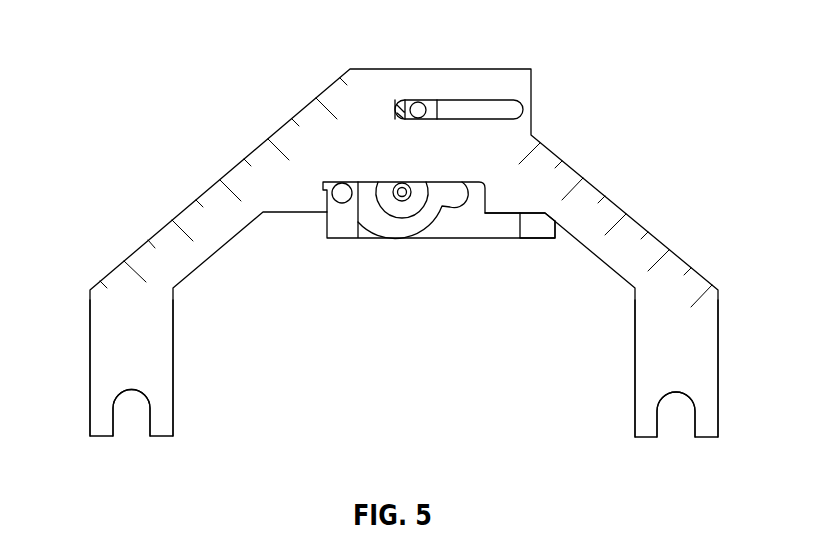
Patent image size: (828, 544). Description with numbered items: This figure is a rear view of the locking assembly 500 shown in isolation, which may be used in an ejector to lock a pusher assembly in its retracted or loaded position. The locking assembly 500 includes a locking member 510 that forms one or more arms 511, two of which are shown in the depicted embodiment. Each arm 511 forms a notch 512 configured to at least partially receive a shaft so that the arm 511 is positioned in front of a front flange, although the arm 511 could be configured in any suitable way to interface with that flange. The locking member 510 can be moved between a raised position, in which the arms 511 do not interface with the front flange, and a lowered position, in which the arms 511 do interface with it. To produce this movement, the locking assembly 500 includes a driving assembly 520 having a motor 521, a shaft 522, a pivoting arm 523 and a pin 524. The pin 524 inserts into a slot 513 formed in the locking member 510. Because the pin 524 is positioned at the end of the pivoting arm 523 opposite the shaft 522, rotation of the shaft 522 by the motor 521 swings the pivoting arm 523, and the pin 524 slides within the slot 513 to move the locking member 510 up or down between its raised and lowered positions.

The locking assembly 500 is at (409, 247).
The locking member 510 is at (266, 140).
The arm 511 is at (111, 296).
The notch 512 is at (134, 426).
The slot 513 is at (466, 108).
The driving assembly 520 is at (430, 246).
The motor 521 is at (474, 226).
The shaft 522 is at (402, 201).
The pivoting arm 523 is at (394, 108).
The pin 524 is at (416, 104).